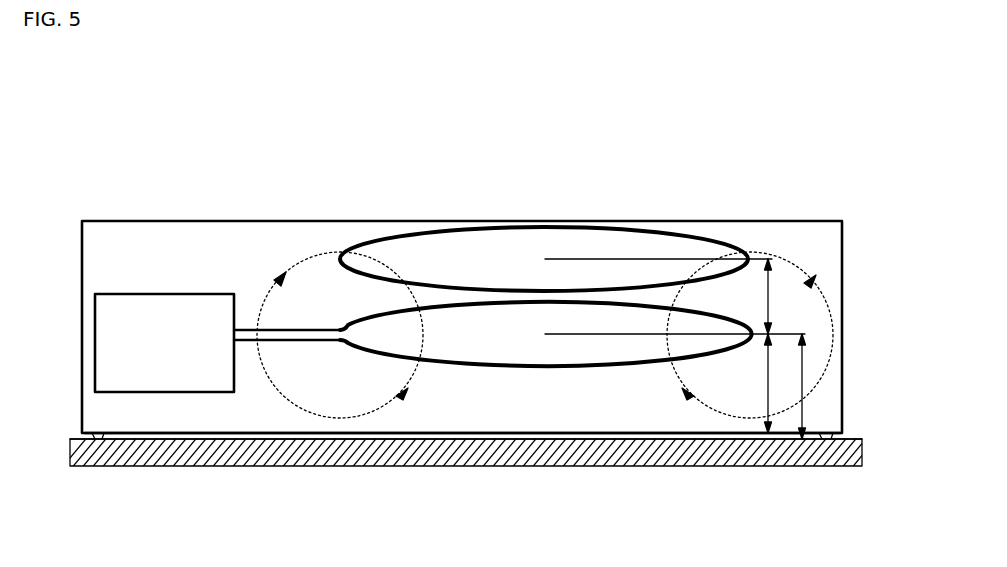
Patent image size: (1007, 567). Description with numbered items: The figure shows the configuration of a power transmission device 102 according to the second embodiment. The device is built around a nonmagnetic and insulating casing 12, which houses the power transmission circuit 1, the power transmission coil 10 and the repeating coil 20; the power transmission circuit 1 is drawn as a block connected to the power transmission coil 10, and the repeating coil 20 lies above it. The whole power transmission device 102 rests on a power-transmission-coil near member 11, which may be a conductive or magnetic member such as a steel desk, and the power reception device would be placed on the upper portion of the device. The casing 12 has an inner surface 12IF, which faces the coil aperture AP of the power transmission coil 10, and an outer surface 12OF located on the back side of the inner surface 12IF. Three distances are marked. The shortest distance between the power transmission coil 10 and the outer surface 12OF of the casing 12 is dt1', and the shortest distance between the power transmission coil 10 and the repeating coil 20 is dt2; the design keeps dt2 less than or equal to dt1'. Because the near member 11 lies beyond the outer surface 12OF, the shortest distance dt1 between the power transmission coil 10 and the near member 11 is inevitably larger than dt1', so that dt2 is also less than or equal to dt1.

The power transmission device 102 is at (740, 108).
The power transmission circuit 1 is at (166, 293).
The power transmission coil 10 is at (356, 318).
The repeating coil 20 is at (352, 244).
The casing 12 is at (842, 221).
The power-transmission-coil near member 11 is at (472, 458).
The inner surface 12IF is at (609, 426).
The outer surface 12OF is at (609, 446).
The coil aperture AP is at (528, 356).
The shortest distance between the power transmission coil and the power-transmission dt1 is at (793, 386).
The shortest distance between the power transmission coil and the outer surface of t dt1' is at (758, 383).
The shortest distance between the power transmission coil and the repeating coil dt2 is at (758, 296).